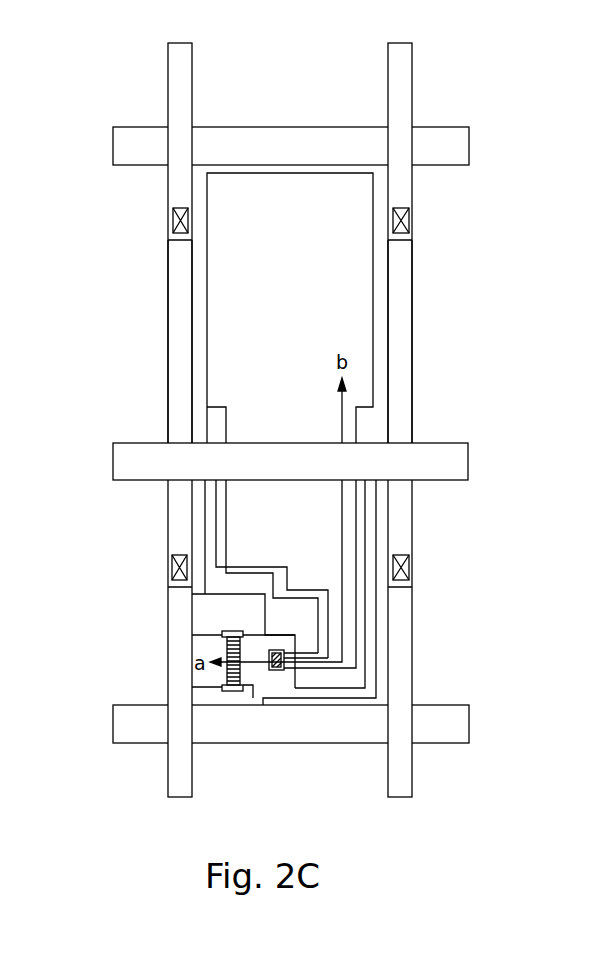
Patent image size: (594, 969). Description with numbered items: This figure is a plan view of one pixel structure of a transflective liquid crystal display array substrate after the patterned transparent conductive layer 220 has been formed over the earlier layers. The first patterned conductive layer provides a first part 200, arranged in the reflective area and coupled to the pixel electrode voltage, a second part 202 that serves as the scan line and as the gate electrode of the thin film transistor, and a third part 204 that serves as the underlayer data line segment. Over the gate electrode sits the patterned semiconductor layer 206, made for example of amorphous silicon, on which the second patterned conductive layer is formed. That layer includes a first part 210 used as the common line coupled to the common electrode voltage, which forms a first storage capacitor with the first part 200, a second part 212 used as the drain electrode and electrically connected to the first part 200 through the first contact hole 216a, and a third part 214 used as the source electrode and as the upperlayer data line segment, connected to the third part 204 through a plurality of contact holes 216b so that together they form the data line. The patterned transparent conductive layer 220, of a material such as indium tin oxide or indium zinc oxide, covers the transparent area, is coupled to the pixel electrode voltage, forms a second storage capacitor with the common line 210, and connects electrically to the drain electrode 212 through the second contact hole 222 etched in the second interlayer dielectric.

The first part of the first patterned conductive layer 200 is at (226, 585).
The second part of the first patterned conductive layer 202 is at (462, 145).
The third part of the first patterned conductive layer 204 is at (177, 297).
The patterned semiconductor layer 206 is at (230, 690).
The first part of the second patterned conductive layer 210 is at (455, 461).
The second part of the second patterned conductive layer 212 is at (245, 668).
The third part of the second patterned conductive layer 214 is at (176, 55).
The first contact hole 216a is at (278, 671).
The contact holes 216b is at (172, 220).
The patterned transparent conductive layer 220 is at (343, 333).
The second contact hole 222 is at (285, 660).